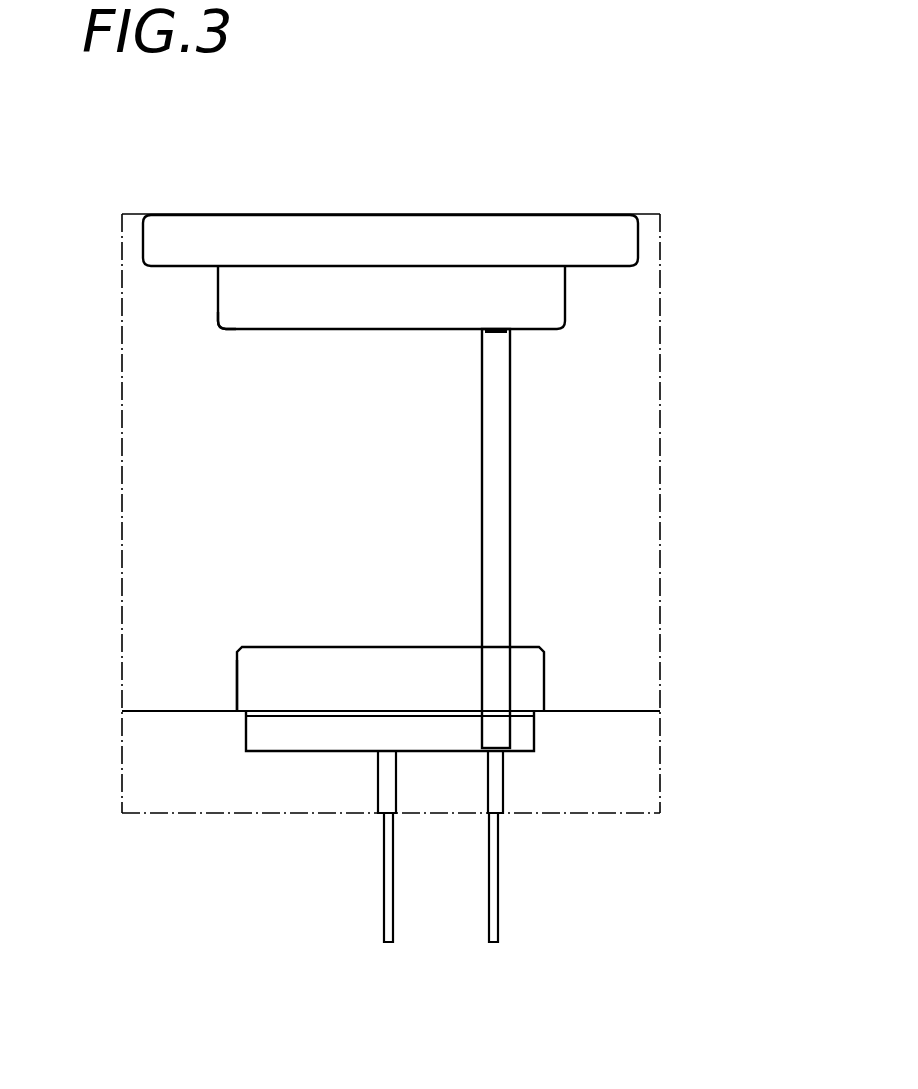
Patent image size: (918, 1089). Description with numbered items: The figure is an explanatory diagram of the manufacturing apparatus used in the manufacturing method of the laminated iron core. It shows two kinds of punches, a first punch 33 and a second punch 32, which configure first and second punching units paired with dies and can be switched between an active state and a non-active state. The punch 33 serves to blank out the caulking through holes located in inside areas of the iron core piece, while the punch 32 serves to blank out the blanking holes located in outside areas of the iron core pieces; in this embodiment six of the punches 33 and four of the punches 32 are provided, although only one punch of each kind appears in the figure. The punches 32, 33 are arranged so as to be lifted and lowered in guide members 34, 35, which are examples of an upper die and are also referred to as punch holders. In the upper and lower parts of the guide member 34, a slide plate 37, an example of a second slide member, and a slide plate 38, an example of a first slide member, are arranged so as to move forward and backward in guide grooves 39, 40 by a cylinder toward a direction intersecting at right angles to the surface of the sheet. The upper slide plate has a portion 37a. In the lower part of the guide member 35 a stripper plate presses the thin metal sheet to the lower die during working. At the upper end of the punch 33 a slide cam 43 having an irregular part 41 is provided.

The top plate 37a is at (505, 237).
The slide plate 37 is at (550, 298).
The guide groove 39 is at (218, 298).
The guide member 34 is at (662, 478).
The slide plate 38 is at (537, 682).
The guide member 35 is at (660, 778).
The irregular part 41 is at (257, 715).
The guide groove 40 is at (237, 681).
The slide cam 43 is at (334, 733).
The punch 33 is at (393, 872).
The punch 32 is at (498, 892).